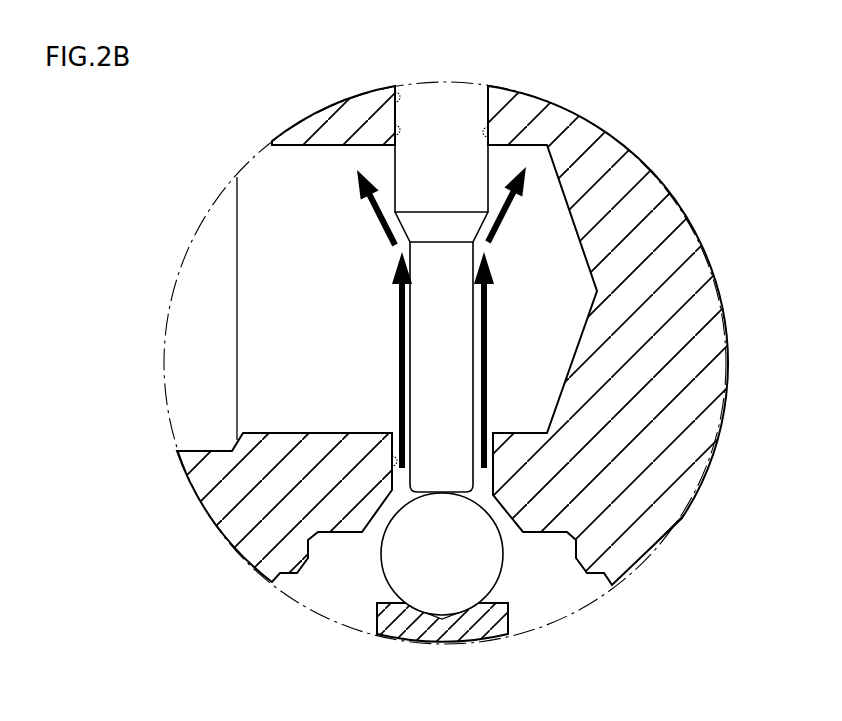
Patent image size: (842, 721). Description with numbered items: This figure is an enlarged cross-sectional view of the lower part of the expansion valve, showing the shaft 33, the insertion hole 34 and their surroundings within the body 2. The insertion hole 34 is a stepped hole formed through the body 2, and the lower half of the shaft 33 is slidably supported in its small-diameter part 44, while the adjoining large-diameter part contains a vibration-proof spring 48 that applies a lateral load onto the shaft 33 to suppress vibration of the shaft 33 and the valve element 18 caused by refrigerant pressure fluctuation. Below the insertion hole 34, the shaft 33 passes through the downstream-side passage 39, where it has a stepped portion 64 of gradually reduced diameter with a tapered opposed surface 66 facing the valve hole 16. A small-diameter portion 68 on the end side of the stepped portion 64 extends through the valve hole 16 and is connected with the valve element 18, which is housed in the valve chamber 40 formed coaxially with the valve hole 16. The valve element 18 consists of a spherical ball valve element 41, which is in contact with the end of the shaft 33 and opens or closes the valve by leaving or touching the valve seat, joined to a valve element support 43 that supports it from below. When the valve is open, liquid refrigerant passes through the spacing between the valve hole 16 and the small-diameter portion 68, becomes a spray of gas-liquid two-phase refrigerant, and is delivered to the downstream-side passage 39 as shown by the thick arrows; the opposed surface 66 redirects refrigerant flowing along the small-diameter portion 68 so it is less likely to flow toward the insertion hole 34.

The body 2 is at (607, 329).
The valve hole 16 is at (435, 289).
The valve element 18 is at (350, 602).
The shaft 33 is at (487, 103).
The insertion hole 34 is at (233, 70).
The downstream-side passage 39 is at (285, 177).
The valve chamber 40 is at (313, 598).
The ball valve element 41 is at (387, 582).
The valve element support 43 is at (377, 620).
The small-diameter part 44 is at (393, 87).
The vibration-proof spring 48 is at (393, 128).
The stepped portion 64 is at (487, 249).
The opposed surface 66 is at (483, 223).
The small-diameter portion 68 is at (477, 293).